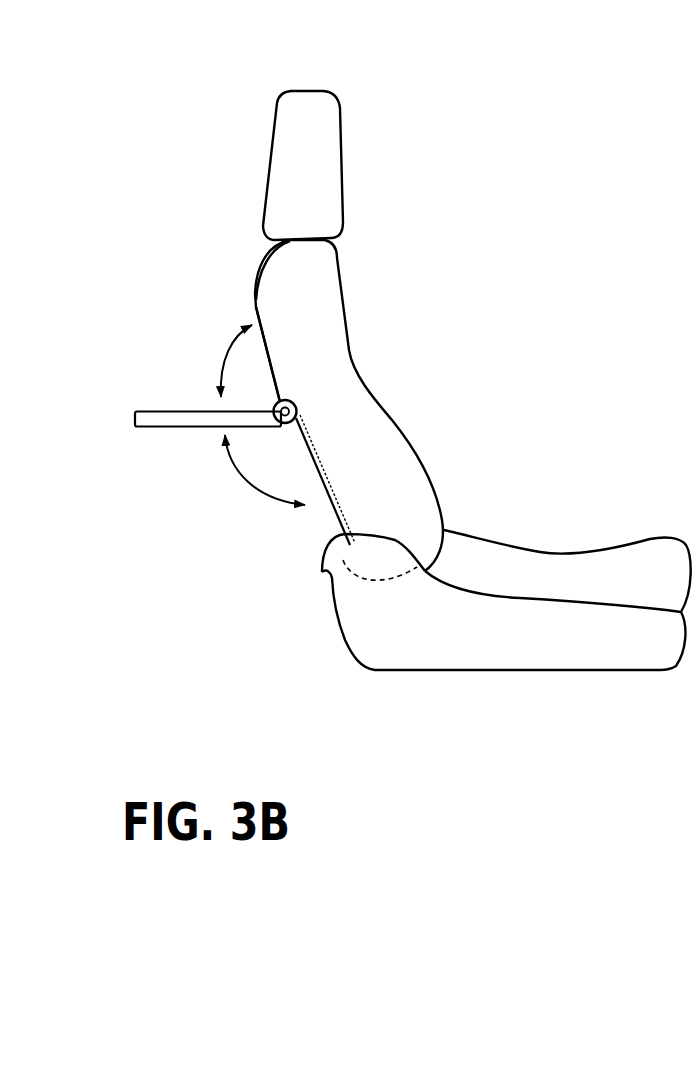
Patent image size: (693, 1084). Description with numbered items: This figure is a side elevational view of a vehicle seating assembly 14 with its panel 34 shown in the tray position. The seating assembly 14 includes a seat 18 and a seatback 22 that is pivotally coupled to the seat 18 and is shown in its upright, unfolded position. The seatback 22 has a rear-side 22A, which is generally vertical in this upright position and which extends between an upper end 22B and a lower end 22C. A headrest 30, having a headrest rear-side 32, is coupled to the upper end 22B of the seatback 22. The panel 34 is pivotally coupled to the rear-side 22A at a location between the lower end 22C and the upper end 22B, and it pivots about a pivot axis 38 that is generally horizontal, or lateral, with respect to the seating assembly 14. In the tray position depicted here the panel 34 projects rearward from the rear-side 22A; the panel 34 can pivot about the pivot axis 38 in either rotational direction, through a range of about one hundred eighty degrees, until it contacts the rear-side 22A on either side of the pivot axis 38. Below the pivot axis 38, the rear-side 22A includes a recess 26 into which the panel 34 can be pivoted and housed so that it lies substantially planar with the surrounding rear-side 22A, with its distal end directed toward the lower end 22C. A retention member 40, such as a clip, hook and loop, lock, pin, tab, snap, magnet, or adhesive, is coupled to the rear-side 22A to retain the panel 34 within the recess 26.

The vehicle seating assembly 14 is at (464, 675).
The seat 18 is at (637, 565).
The seatback 22 is at (311, 330).
The rear-side 22A is at (258, 307).
The upper end 22B is at (260, 266).
The lower end 22C is at (358, 598).
The recess 26 is at (322, 495).
The headrest 30 is at (298, 183).
The headrest rear-side 32 is at (268, 130).
The panel 34 is at (173, 410).
The pivot axis 38 is at (275, 425).
The retention member 40 is at (337, 553).